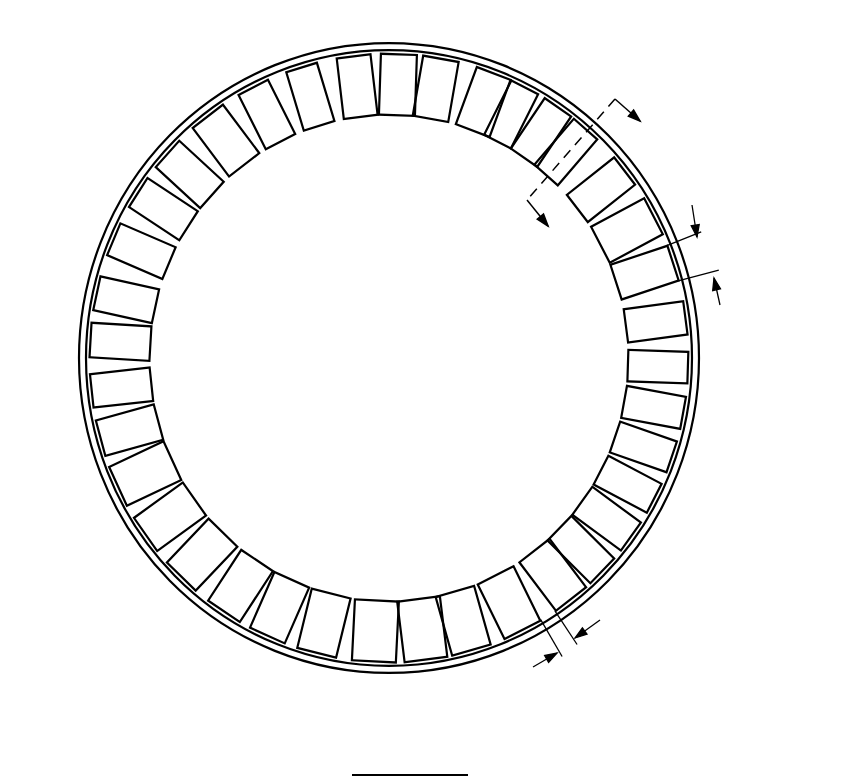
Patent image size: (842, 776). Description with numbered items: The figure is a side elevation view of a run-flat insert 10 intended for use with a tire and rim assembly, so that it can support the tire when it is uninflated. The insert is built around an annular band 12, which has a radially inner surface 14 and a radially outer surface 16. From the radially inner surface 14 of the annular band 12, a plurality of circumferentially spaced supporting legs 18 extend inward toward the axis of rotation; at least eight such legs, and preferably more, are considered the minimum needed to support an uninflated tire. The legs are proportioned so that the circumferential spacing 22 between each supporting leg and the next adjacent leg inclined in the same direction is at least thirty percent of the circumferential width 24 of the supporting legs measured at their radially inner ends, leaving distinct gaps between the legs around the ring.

The run-flat insert 10 is at (384, 409).
The annular band 12 is at (218, 620).
The radially inner surface 14 is at (157, 303).
The radially outer surface 16 is at (83, 303).
The supporting legs 18 is at (123, 245).
The circumferential spacing 22 is at (600, 620).
The circumferential width 24 is at (692, 205).